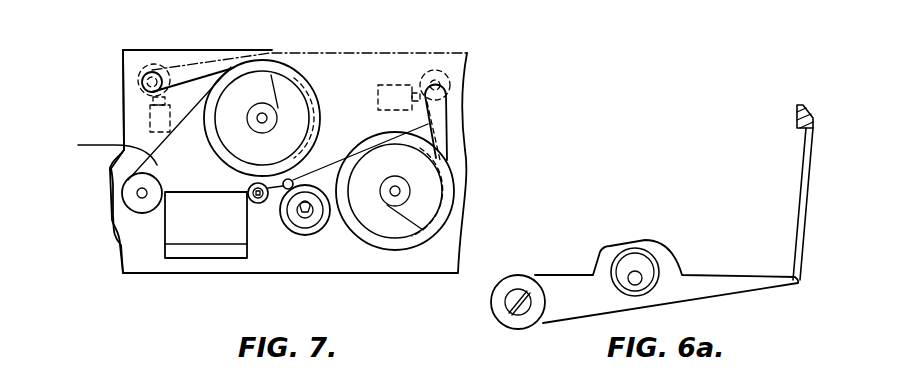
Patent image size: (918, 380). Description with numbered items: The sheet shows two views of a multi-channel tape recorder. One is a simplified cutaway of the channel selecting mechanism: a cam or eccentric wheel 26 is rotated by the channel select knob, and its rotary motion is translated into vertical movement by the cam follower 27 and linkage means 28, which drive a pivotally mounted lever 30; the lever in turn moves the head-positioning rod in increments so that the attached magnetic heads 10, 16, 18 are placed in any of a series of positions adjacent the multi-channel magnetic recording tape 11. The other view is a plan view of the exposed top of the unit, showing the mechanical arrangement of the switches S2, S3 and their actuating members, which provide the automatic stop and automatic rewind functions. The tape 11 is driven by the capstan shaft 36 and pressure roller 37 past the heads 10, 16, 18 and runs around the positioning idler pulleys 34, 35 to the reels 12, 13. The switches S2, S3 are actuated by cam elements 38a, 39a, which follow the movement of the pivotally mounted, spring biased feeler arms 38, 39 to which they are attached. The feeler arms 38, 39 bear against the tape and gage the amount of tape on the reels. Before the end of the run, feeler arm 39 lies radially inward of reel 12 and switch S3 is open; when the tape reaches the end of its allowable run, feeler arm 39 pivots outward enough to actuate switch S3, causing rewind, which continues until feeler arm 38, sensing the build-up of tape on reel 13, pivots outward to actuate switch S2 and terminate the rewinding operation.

In FIG. 7, the magnetic head 10 is at (166, 250).
In FIG. 7, the multi-channel magnetic recording tape 11 is at (262, 161).
In FIG. 7, the reel 12 is at (386, 226).
In FIG. 7, the reel 13 is at (290, 70).
In FIG. 7, the magnetic head 16 is at (166, 250).
In FIG. 7, the magnetic head 18 is at (190, 250).
In FIG. 6a, the cam or eccentric wheel 26 is at (636, 262).
In FIG. 6a, the cam follower 27 is at (715, 277).
In FIG. 6a, the linkage means 28 is at (805, 175).
In FIG. 6a, the lever 30 is at (803, 106).
In FIG. 7, the positioning idler pulley 34 is at (260, 203).
In FIG. 7, the positioning idler pulley 35 is at (128, 185).
In FIG. 7, the capstan shaft 36 is at (293, 182).
In FIG. 7, the pressure roller 37 is at (312, 232).
In FIG. 7, the feeler arm 38 is at (202, 67).
In FIG. 7, the cam element 38a is at (152, 67).
In FIG. 7, the feeler arm 39 is at (440, 126).
In FIG. 7, the cam element 39a is at (448, 88).
In FIG. 7, the switch S2 is at (150, 115).
In FIG. 7, the switch S3 is at (390, 90).